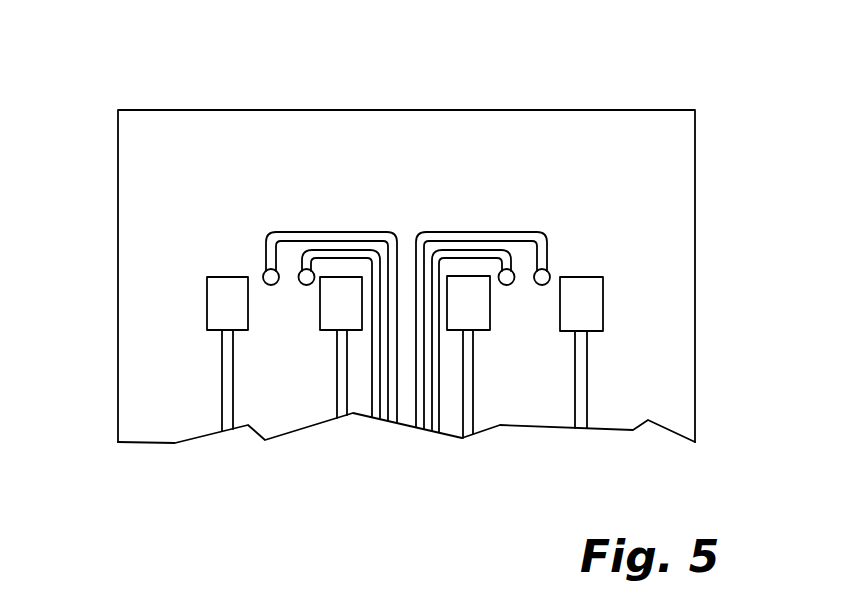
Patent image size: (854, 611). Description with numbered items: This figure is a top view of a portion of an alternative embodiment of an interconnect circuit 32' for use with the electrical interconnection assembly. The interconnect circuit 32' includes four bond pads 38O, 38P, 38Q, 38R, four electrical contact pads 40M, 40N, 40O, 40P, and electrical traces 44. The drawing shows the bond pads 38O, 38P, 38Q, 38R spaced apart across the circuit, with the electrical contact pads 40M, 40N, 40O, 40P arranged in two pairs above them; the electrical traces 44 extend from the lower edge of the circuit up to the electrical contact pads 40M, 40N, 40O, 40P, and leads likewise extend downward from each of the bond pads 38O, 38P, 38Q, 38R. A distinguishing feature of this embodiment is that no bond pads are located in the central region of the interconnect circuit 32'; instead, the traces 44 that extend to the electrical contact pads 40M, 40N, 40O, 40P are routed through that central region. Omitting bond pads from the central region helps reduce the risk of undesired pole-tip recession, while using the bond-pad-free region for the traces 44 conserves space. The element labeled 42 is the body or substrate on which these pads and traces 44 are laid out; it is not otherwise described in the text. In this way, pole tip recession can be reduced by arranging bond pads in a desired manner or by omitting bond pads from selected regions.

The interconnect circuit 32' is at (423, 278).
The substrate 42 is at (450, 138).
The bond pad 38O is at (222, 298).
The bond pad 38P is at (333, 298).
The bond pad 38Q is at (478, 303).
The bond pad 38R is at (583, 302).
The electrical contact pad 40M is at (265, 269).
The electrical contact pad 40N is at (306, 268).
The electrical contact pad 40O is at (510, 268).
The electrical contact pad 40P is at (547, 268).
The electrical traces 44 is at (227, 376).